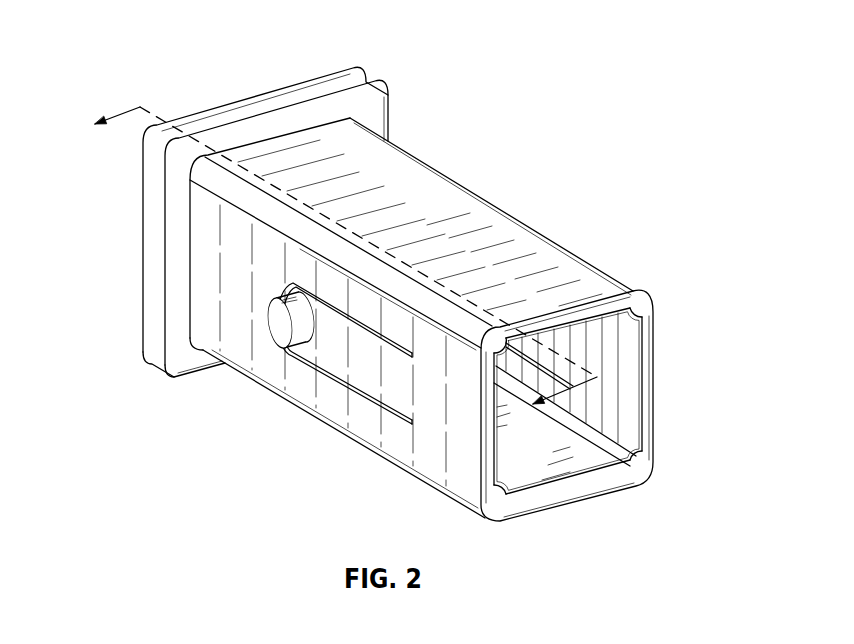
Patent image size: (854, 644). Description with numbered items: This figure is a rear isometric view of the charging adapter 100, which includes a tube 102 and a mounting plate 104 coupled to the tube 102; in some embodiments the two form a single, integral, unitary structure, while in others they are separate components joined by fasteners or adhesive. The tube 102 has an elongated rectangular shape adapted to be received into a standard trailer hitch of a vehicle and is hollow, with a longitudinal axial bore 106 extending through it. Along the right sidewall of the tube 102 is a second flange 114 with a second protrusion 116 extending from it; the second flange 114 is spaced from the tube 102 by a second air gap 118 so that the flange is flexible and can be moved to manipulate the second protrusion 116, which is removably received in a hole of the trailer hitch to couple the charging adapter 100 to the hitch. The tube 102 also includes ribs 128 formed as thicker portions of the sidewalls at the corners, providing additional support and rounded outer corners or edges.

The charging adapter 100 is at (125, 50).
The tube 102 is at (532, 247).
The mounting plate 104 is at (153, 300).
The longitudinal axial bore 106 is at (593, 397).
The second flange 114 is at (342, 348).
The second protrusion 116 is at (283, 325).
The second air gap 118 is at (395, 421).
The ribs 128 is at (636, 467).